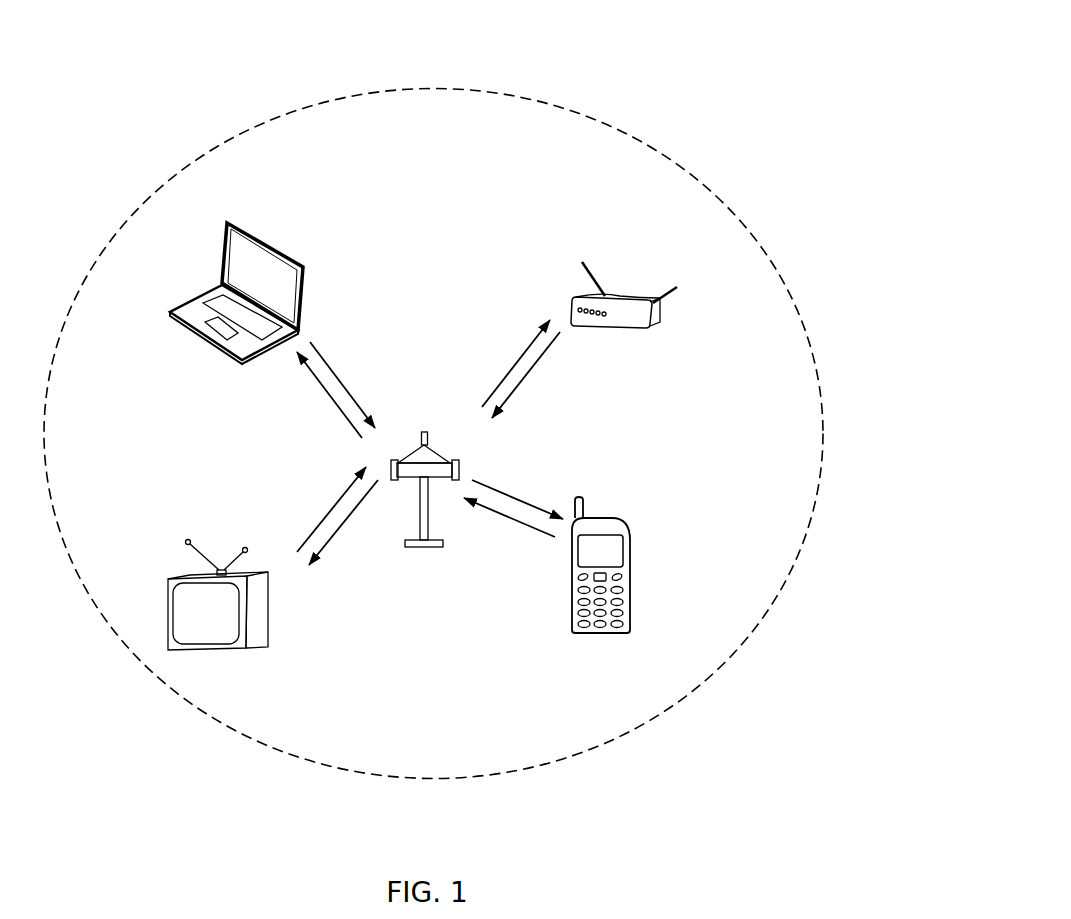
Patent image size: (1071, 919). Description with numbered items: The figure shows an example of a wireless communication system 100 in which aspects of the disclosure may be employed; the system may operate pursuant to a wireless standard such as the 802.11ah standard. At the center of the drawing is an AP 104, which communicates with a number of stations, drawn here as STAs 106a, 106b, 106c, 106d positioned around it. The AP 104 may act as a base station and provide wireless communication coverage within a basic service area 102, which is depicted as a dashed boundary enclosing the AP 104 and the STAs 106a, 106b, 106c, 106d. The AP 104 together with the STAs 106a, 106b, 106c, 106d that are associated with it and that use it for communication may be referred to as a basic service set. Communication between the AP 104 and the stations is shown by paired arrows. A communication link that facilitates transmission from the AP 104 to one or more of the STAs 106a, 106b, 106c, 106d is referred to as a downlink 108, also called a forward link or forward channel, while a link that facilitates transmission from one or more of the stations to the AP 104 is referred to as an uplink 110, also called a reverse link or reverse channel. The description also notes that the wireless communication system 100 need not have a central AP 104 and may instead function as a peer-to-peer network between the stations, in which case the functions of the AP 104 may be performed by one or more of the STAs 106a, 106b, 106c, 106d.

The wireless communication system 100 is at (721, 40).
The basic service area 102 is at (762, 250).
The AP 104 is at (423, 432).
The STA 106a is at (603, 519).
The STA 106b is at (263, 573).
The STA 106c is at (237, 222).
The STA 106d is at (635, 300).
The downlink 108 is at (503, 485).
The uplink 110 is at (463, 518).